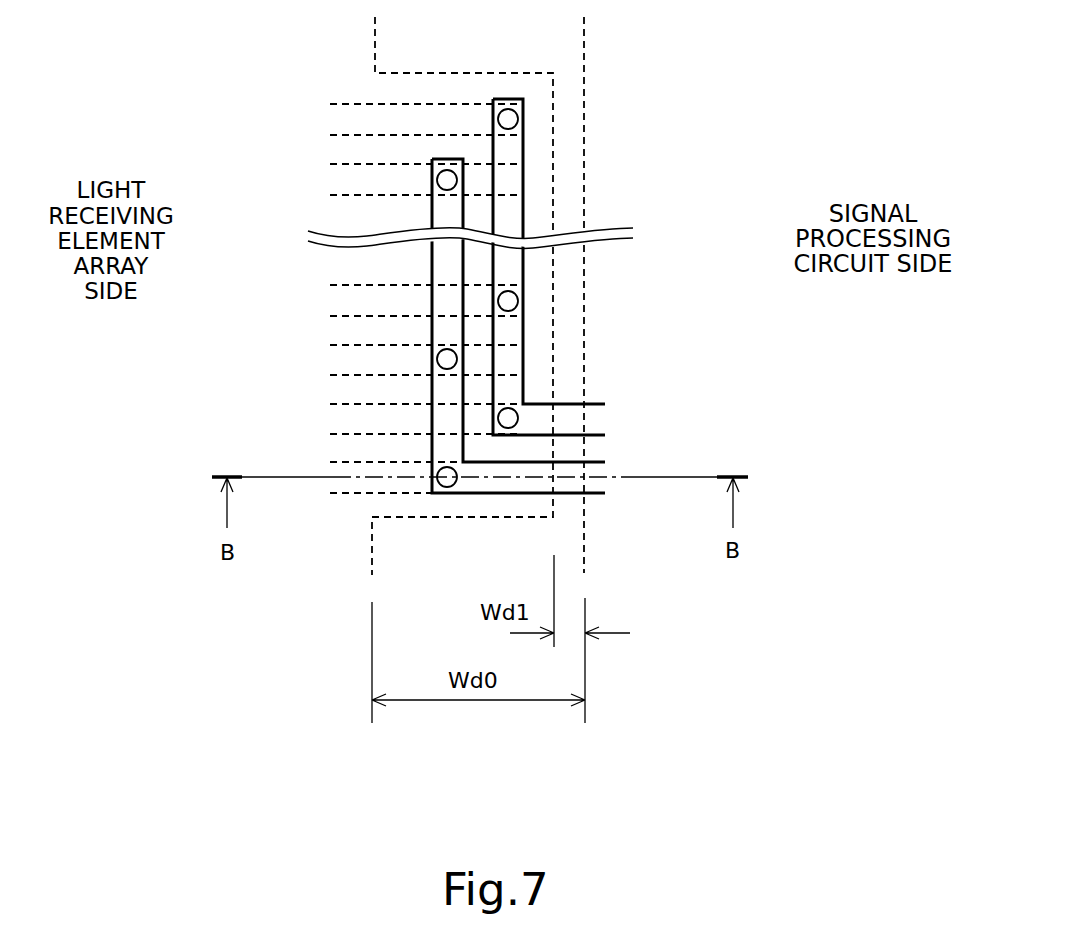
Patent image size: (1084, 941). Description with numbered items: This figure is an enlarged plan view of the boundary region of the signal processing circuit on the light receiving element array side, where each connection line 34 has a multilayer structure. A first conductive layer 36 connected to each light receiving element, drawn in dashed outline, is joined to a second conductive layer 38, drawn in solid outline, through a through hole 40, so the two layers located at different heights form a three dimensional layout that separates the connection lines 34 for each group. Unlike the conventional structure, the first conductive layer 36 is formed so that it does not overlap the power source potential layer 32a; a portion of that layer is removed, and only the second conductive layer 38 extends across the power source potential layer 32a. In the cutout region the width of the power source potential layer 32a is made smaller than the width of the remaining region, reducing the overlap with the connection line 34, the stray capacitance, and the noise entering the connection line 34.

The power source potential layer 32a is at (573, 50).
The connection line 34 is at (457, 310).
The first conductive layer 36 is at (297, 87).
The second conductive layer 38 is at (440, 210).
The through hole 40 is at (447, 172).